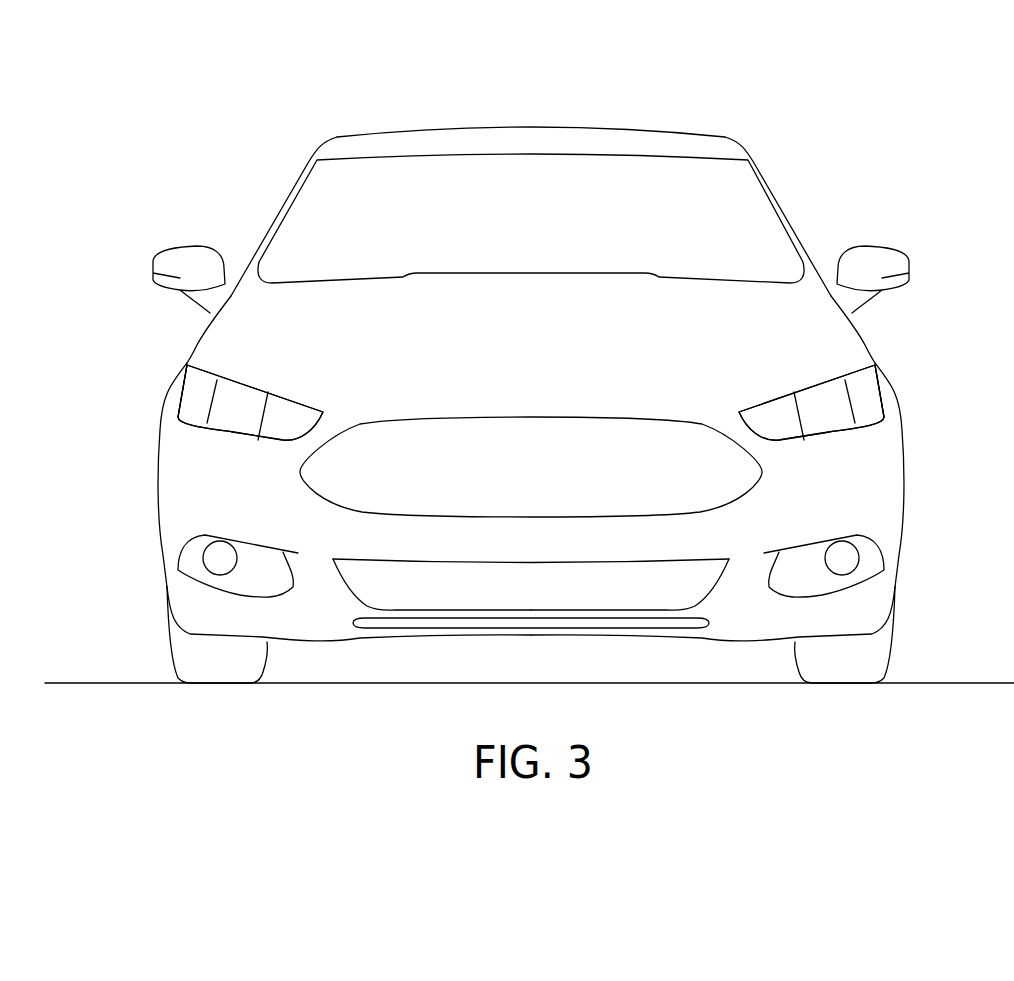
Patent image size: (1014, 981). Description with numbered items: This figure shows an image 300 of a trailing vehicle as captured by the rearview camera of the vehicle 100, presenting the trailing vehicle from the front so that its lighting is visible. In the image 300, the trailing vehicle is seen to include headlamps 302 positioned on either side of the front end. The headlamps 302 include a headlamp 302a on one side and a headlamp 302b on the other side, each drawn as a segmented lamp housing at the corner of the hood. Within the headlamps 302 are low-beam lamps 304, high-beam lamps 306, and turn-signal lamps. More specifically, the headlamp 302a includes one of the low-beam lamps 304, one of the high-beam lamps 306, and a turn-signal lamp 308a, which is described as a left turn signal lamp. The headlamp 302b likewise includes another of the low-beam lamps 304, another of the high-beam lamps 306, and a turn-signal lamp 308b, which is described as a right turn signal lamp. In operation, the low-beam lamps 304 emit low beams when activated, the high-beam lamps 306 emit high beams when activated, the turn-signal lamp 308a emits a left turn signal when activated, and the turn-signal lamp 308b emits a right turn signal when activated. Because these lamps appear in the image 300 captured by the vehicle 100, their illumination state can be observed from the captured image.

The vehicle 100 is at (715, 91).
The image 300 is at (550, 105).
The headlamps 302 is at (67, 467).
The headlamp 302a is at (931, 390).
The headlamp 302b is at (131, 390).
The low-beam lamps 304 is at (240, 405).
The high-beam lamps 306 is at (290, 418).
The turn-signal lamp 308a is at (870, 398).
The turn-signal lamp 308b is at (192, 398).